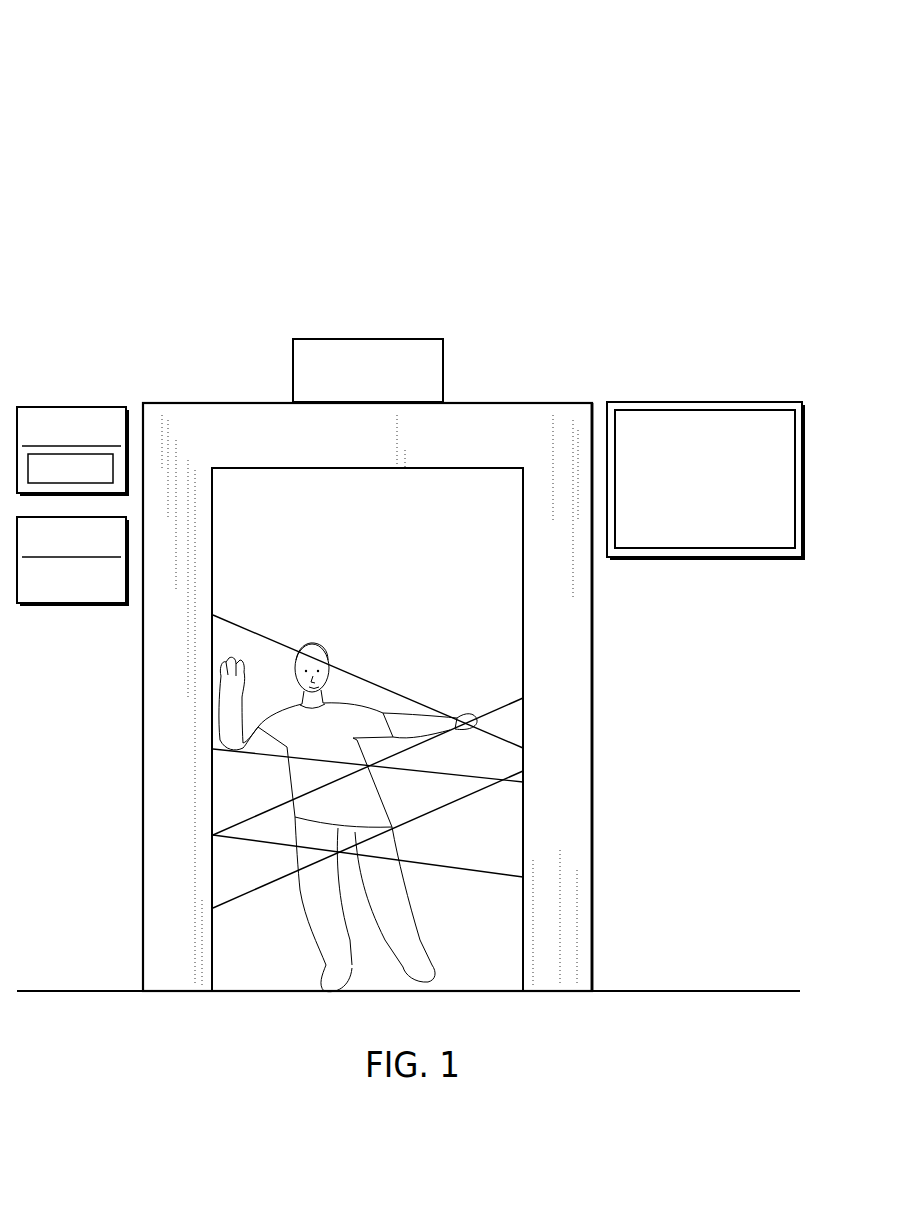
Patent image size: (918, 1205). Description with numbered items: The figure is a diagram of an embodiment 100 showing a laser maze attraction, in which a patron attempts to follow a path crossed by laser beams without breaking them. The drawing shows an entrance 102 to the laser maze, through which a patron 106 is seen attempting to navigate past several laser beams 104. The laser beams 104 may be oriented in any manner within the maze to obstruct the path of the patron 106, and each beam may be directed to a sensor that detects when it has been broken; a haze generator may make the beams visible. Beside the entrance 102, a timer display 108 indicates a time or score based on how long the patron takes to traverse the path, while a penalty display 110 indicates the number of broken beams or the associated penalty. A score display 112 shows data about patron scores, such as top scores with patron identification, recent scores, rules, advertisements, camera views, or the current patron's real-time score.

The laser maze attraction 100 is at (138, 168).
The entrance 102 is at (523, 660).
The laser beams 104 is at (488, 868).
The patron 106 is at (328, 953).
The timer display 108 is at (57, 407).
The penalty display 110 is at (109, 603).
The score display 112 is at (713, 402).